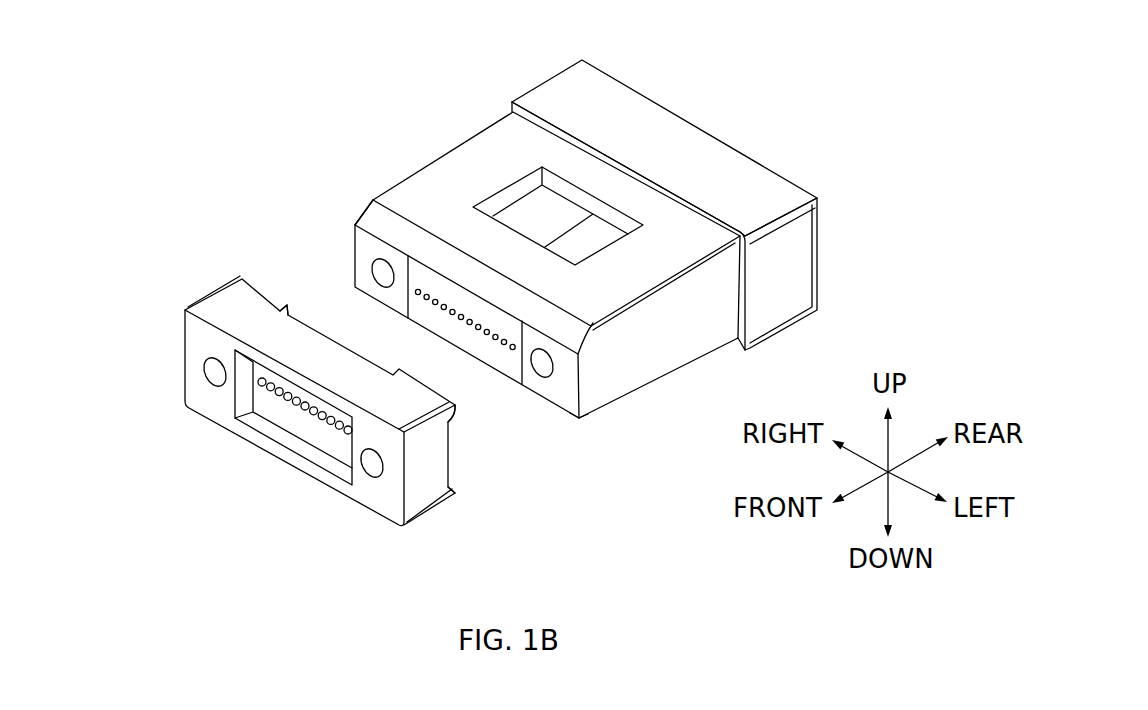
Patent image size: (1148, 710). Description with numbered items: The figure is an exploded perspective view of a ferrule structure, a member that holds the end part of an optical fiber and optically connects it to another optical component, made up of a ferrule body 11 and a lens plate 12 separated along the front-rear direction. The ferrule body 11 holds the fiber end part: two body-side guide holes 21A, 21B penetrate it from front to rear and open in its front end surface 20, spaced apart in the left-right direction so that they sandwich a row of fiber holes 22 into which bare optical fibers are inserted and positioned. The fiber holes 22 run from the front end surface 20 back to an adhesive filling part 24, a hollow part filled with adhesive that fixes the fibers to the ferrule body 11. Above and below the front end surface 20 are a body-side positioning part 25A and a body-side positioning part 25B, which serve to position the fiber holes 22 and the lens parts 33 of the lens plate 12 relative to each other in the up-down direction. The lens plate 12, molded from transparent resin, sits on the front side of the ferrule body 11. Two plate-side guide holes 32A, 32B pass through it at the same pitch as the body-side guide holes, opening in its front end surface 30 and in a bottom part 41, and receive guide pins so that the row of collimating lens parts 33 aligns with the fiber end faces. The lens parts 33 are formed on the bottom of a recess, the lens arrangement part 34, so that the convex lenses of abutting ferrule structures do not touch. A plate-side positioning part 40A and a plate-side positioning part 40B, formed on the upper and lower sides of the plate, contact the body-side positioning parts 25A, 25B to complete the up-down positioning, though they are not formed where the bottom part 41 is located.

The ferrule body 11 is at (390, 96).
The lens plate 12 is at (175, 273).
The front end surface 20 is at (358, 248).
The body-side guide hole 21A is at (374, 267).
The body-side guide hole 21B is at (539, 379).
The fiber holes 22 is at (458, 319).
The adhesive filling part 24 is at (522, 196).
The body-side positioning part 25A is at (373, 218).
The body-side positioning part 25B is at (586, 430).
The front end surface 30 is at (193, 341).
The plate-side guide hole 32A is at (217, 377).
The plate-side guide hole 32B is at (372, 468).
The lens parts 33 is at (318, 420).
The lens arrangement part 34 is at (267, 435).
The plate-side positioning part 40A is at (465, 424).
The plate-side positioning part 40B is at (460, 475).
The bottom part 41 is at (306, 320).